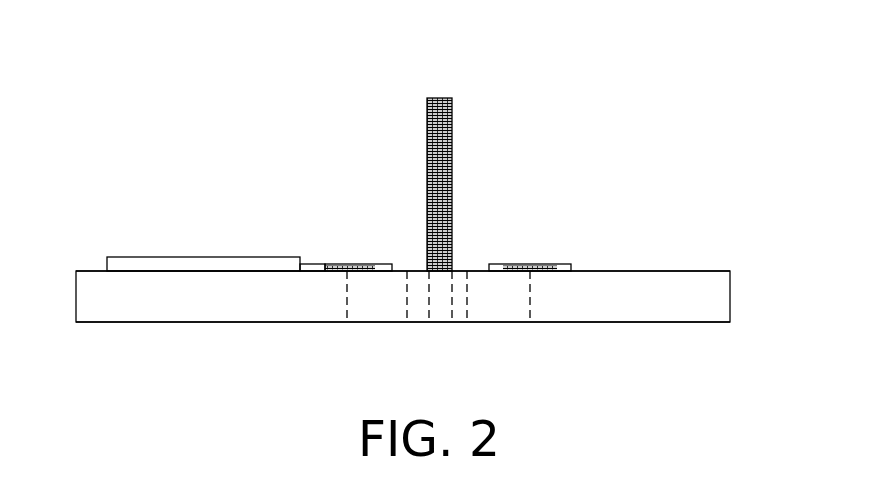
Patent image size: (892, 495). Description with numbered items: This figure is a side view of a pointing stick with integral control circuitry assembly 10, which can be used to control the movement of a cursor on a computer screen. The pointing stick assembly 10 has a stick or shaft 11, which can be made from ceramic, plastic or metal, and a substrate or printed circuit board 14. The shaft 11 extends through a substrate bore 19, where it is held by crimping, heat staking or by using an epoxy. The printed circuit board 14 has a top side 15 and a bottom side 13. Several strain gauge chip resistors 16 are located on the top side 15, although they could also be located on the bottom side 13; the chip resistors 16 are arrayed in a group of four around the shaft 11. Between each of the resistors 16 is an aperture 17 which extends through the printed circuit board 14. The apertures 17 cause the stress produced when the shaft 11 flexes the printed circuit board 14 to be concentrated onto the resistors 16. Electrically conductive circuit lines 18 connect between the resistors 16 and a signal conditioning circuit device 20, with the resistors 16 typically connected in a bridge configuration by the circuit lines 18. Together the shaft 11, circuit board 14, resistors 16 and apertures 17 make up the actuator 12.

The pointing stick assembly 10 is at (630, 97).
The shaft 11 is at (427, 167).
The actuator 12 is at (515, 186).
The bottom side 13 is at (662, 322).
The printed circuit board 14 is at (730, 298).
The top side 15 is at (652, 270).
The strain gauge chip resistors 16 is at (355, 263).
The aperture 17 is at (493, 312).
The electrically conductive circuit lines 18 is at (315, 265).
The substrate bore 19 is at (443, 312).
The signal conditioning circuit device 20 is at (200, 257).